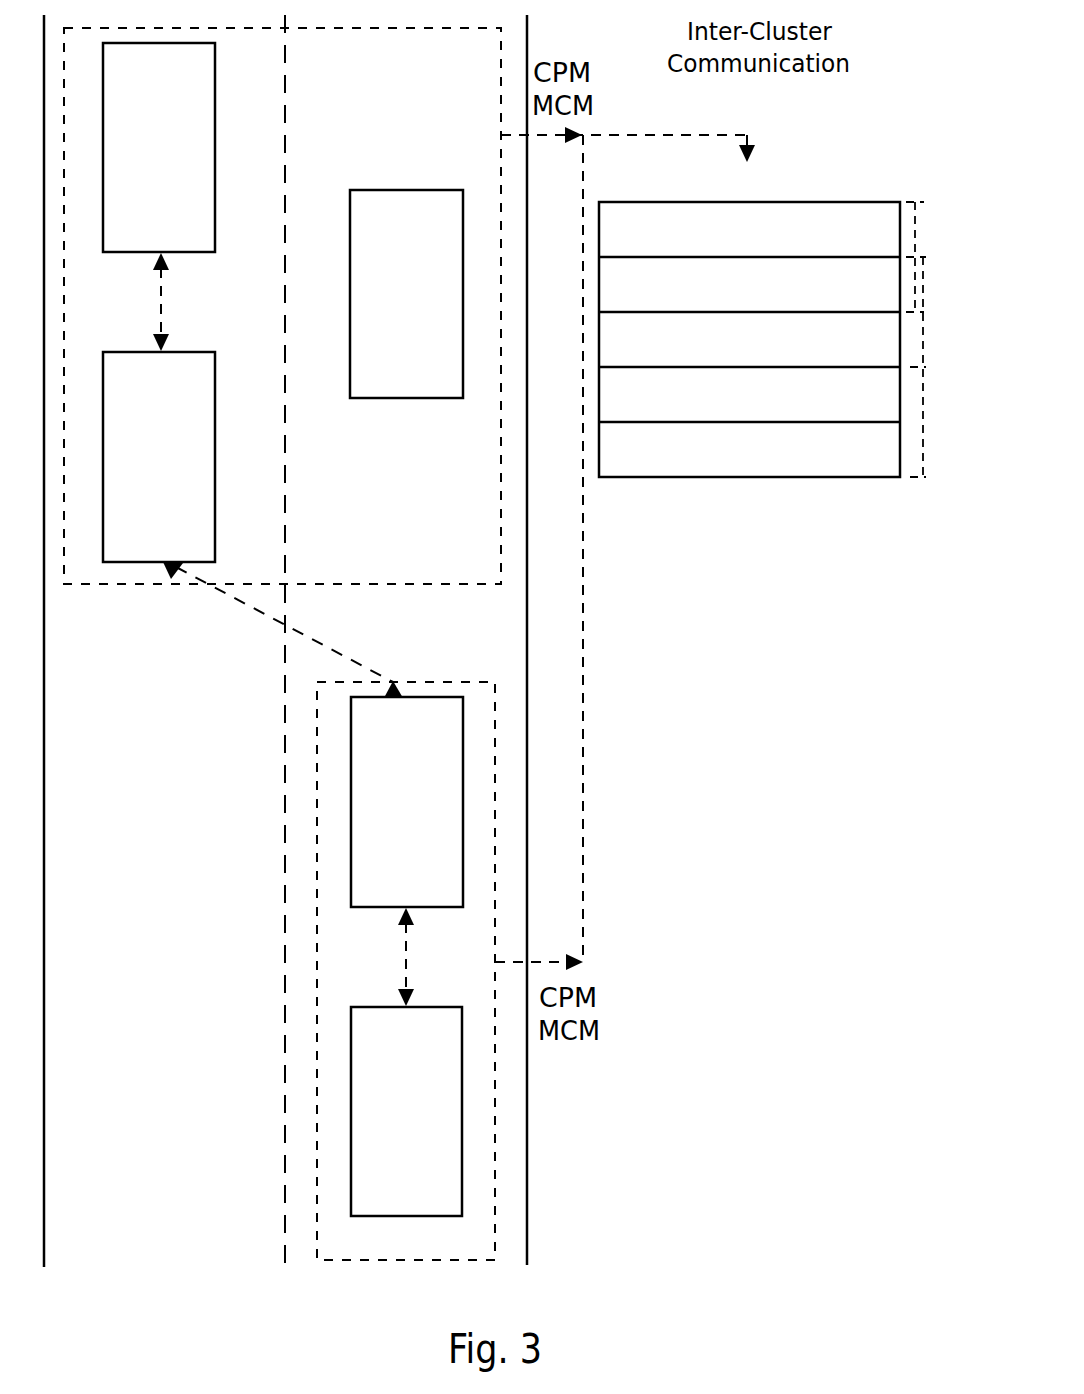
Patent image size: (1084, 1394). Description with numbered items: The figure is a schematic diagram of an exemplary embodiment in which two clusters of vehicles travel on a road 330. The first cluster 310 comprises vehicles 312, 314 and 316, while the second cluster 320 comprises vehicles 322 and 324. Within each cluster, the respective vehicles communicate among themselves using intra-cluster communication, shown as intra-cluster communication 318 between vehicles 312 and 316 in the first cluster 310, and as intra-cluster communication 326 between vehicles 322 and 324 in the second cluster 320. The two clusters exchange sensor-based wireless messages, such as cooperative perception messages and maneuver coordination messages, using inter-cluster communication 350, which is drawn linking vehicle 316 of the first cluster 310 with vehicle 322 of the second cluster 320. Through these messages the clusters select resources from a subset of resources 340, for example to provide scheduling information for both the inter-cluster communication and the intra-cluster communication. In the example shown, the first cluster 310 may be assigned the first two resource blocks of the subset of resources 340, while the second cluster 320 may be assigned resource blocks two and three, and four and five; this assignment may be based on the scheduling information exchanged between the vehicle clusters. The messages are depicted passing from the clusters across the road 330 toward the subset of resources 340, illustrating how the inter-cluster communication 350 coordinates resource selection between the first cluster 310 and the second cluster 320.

The cluster C1 310 is at (375, 585).
The vehicle 312 is at (195, 252).
The vehicle 314 is at (380, 398).
The vehicle 316 is at (216, 545).
The intra-cluster communication 318 is at (163, 313).
The cluster C2 320 is at (408, 1262).
The vehicle 322 is at (351, 818).
The vehicle 324 is at (351, 1156).
The intra-cluster communication 326 is at (408, 945).
The road 330 is at (527, 1143).
The subset of resources 340 is at (735, 478).
The inter-cluster communication 350 is at (243, 608).